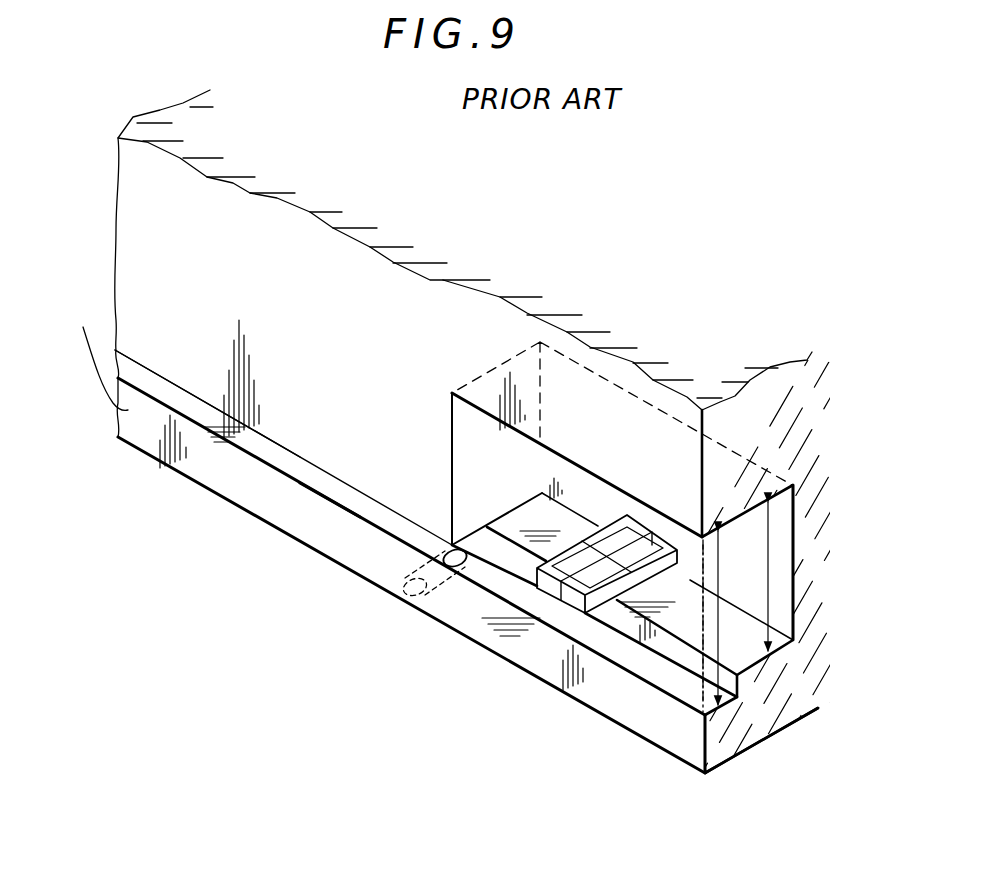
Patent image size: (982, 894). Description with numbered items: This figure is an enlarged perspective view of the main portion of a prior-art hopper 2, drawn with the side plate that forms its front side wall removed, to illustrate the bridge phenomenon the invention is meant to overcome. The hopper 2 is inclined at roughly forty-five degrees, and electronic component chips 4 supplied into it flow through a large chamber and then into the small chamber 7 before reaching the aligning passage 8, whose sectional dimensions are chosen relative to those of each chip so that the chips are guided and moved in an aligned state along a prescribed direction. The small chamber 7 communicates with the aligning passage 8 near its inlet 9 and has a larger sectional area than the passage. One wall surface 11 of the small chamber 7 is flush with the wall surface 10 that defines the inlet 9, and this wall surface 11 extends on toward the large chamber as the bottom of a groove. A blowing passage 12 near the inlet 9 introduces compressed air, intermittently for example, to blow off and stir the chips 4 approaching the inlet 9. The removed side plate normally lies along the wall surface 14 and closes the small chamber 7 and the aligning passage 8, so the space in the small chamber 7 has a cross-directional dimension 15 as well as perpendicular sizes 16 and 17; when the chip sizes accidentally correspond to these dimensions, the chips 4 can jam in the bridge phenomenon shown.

The hopper 2 is at (582, 244).
The electronic component chips 4 is at (628, 537).
The small chamber 7 is at (752, 506).
The aligning passage 8 is at (306, 472).
The inlet 9 is at (474, 560).
The wall surface 10 is at (353, 505).
The wall surface 11 is at (662, 668).
The blowing passage 12 is at (447, 573).
The wall surface 14 is at (140, 305).
The cross-directional dimension 15 is at (708, 571).
The perpendicular size 16 is at (770, 598).
The perpendicular size 17 is at (702, 638).